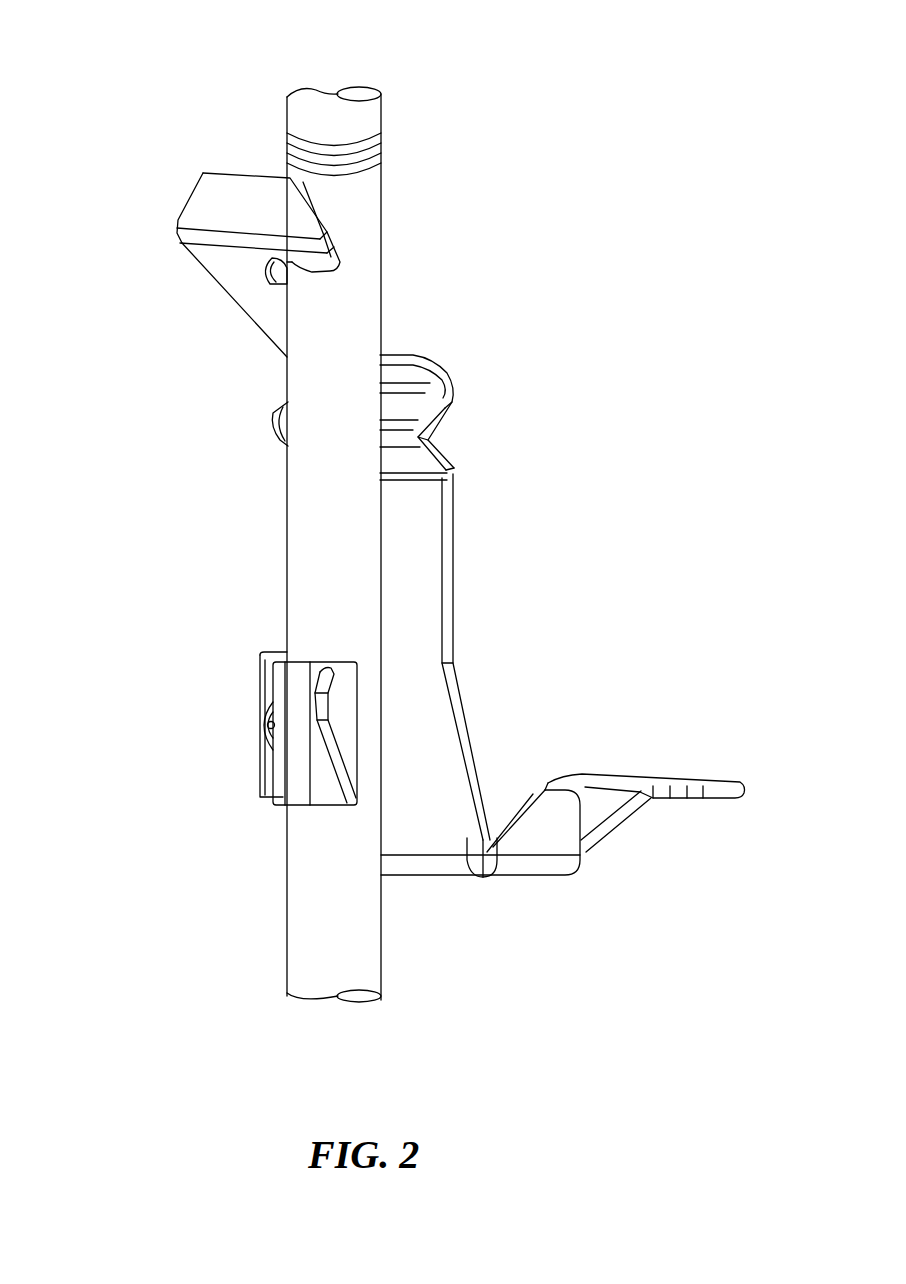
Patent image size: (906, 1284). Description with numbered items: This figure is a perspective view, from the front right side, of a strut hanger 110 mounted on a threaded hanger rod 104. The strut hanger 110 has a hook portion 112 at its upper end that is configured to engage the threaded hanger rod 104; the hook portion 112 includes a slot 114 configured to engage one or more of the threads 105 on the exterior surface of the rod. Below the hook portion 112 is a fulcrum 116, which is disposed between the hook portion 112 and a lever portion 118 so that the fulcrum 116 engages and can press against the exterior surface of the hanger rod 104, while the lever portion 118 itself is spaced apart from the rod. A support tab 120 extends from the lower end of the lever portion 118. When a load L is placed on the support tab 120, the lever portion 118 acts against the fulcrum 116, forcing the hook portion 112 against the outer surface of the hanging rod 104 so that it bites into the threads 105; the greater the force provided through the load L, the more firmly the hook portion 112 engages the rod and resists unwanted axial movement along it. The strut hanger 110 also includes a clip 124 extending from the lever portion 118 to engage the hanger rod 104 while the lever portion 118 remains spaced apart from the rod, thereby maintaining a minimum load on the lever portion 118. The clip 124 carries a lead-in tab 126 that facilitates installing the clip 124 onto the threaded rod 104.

The threaded hanger rod 104 is at (368, 88).
The threads 105 is at (384, 150).
The strut hanger 110 is at (640, 263).
The hook portion 112 is at (180, 271).
The slot 114 is at (281, 275).
The fulcrum 116 is at (404, 432).
The lever portion 118 is at (487, 699).
The support tab 120 is at (687, 761).
The clip 124 is at (252, 758).
The lead-in tab 126 is at (342, 688).
The load L is at (644, 750).